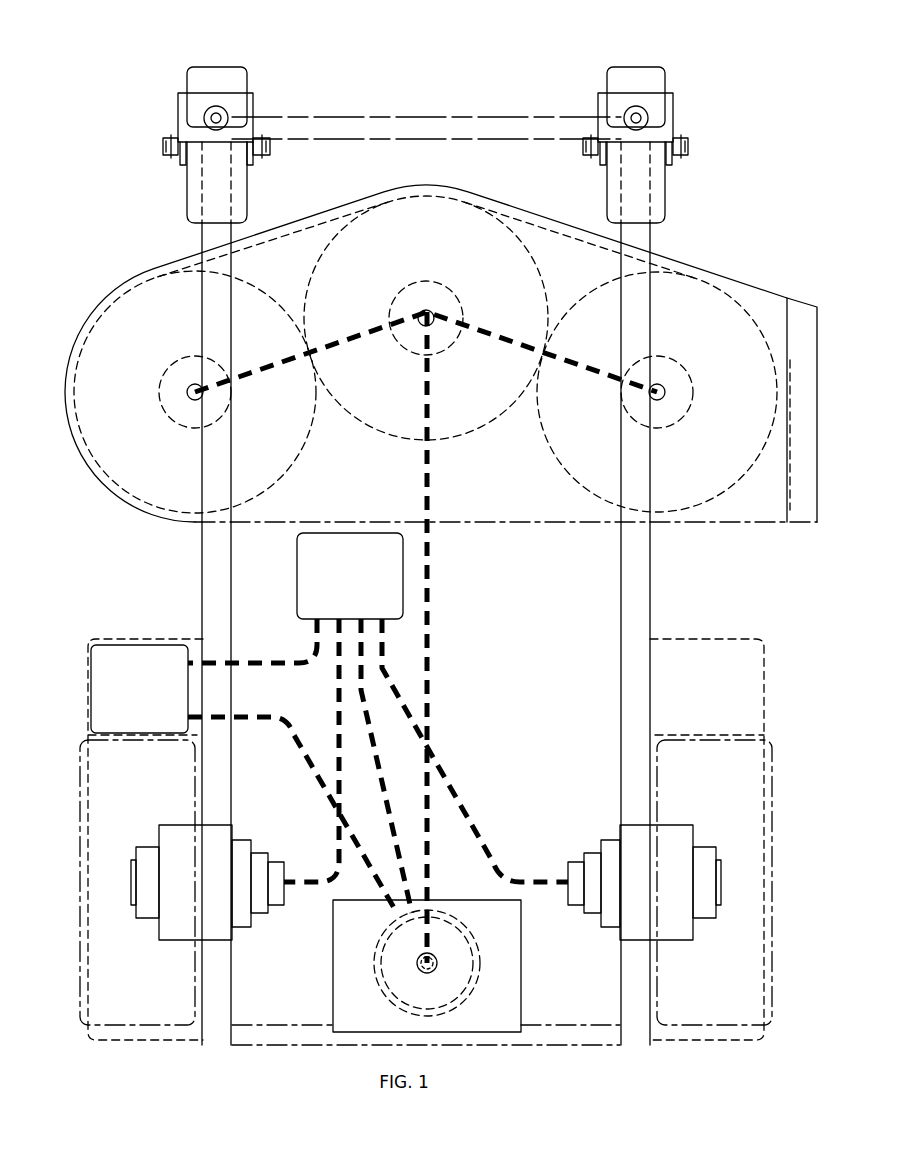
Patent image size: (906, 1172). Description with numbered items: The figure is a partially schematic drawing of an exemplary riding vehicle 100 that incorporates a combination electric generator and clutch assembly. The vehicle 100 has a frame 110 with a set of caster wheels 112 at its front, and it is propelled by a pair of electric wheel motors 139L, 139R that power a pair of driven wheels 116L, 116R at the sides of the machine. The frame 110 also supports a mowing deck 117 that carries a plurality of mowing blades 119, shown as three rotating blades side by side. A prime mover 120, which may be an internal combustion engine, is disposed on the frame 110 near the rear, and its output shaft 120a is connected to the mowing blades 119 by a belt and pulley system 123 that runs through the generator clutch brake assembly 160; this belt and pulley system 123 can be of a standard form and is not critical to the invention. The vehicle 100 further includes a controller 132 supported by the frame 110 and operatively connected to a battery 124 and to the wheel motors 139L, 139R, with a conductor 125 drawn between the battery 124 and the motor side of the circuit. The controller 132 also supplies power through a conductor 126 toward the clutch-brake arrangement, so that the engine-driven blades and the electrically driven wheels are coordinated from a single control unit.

The riding vehicle 100 is at (103, 119).
The frame 110 is at (340, 117).
The caster wheels 112 is at (248, 74).
The driven wheel 116L is at (80, 1008).
The driven wheel 116R is at (772, 1008).
The mowing deck 117 is at (323, 212).
The mowing blades 119 is at (152, 280).
The prime mover 120 is at (374, 1022).
The output shaft 120a is at (438, 966).
The belt and pulley system 123 is at (430, 665).
The battery 124 is at (123, 700).
The power line 125 is at (245, 718).
The conductor 126 is at (384, 790).
The controller 132 is at (334, 588).
The electric wheel motor 139L is at (157, 929).
The electric wheel motor 139R is at (694, 925).
The generator clutch brake assembly 160 is at (496, 934).